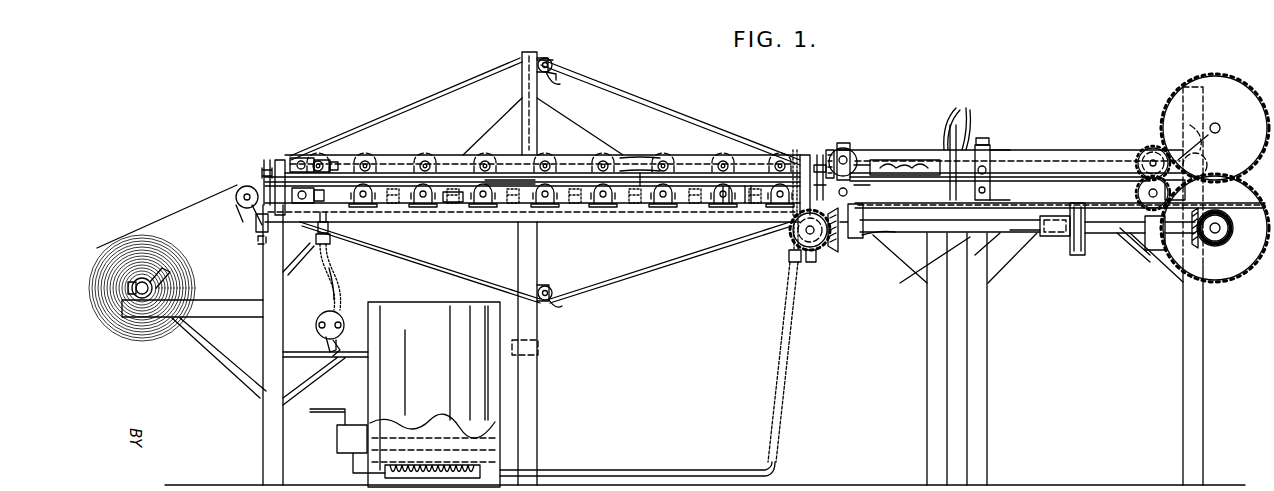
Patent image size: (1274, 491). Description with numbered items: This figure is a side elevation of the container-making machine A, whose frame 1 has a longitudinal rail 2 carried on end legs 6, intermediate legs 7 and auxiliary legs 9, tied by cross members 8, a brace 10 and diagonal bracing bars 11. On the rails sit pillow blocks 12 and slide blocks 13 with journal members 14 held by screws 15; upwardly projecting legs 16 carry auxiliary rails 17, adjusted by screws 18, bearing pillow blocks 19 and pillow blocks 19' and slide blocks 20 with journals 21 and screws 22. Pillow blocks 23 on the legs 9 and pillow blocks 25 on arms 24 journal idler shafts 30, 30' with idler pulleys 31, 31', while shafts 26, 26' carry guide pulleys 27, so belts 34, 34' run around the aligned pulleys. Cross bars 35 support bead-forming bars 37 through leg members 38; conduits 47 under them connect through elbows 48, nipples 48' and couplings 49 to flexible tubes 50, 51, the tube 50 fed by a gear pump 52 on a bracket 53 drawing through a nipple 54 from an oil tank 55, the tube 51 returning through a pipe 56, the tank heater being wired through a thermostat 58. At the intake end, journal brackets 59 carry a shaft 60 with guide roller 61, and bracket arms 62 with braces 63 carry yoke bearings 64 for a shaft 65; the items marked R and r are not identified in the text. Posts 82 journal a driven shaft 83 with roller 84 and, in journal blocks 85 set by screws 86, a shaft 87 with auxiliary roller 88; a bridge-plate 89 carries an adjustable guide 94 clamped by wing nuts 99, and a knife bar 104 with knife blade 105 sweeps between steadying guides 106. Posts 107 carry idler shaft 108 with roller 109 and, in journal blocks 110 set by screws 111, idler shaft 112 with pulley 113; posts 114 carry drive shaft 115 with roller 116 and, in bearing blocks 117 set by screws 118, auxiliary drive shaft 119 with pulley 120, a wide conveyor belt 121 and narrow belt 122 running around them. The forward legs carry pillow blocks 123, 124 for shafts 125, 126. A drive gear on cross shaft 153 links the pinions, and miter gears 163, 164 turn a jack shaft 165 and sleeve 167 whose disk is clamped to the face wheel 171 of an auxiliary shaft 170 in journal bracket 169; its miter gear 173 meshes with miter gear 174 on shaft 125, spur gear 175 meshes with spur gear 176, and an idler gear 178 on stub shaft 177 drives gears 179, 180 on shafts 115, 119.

The frame 1 is at (915, 319).
The longitudinal rail 2 is at (678, 236).
The end legs 6 is at (263, 433).
The intermediate legs 7 is at (967, 392).
The cross members 8 is at (258, 240).
The auxiliary legs 9 is at (537, 398).
The brace 10 is at (540, 348).
The diagonal bracing bars 11 is at (497, 118).
The pillow blocks 12 is at (425, 207).
The slide blocks 13 is at (300, 205).
The journal members 14 is at (318, 203).
The screws 15 is at (330, 230).
The legs 16 is at (280, 160).
The auxiliary rails 17 is at (633, 157).
The screws 18 is at (265, 158).
The pillow blocks 19 is at (721, 150).
The upper trolley 19' is at (401, 149).
The slide blocks 20 is at (322, 160).
The journals 21 is at (300, 158).
The screws 22 is at (336, 160).
The pillow blocks 23 is at (560, 275).
The arms 24 is at (528, 52).
The pillow blocks 25 is at (552, 60).
The shafts 26 is at (723, 224).
The shafts 26' is at (487, 149).
The guide pulleys 27 is at (500, 158).
The idler shaft 30 is at (548, 311).
The idler shaft 30' is at (572, 62).
The idler pulleys 31 is at (573, 311).
The idler pulleys 31' is at (564, 84).
The belts 34 is at (671, 263).
The belts 34' is at (545, 108).
The cross bars 35 is at (412, 203).
The bead-forming bars 37 is at (642, 173).
The leg members 38 is at (748, 205).
The tubular conduits 47 is at (454, 195).
The elbows 48 is at (783, 165).
The nipples 48' is at (558, 255).
The couplings 49 is at (335, 258).
The flexible tube 50 is at (336, 292).
The flexible tube 51 is at (785, 382).
The gear pump 52 is at (316, 325).
The supporting bracket 53 is at (317, 360).
The nipple 54 is at (341, 352).
The oil tank 55 is at (431, 366).
The pipe 56 is at (634, 470).
The thermostat 58 is at (340, 447).
The journal brackets 59 is at (256, 222).
The horizontal shaft 60 is at (244, 200).
The guide roller 61 is at (244, 186).
The bracket arms 62 is at (153, 318).
The diagonal braces 63 is at (213, 360).
The yoke bearings 64 is at (140, 294).
The horizontal shaft 65 is at (130, 290).
The posts 82 is at (848, 152).
The driven shaft 83 is at (855, 240).
The roller 84 is at (950, 218).
The journal block 85 is at (858, 170).
The screw 86 is at (843, 143).
The shaft 87 is at (856, 156).
The auxiliary roller 88 is at (832, 150).
The bridge-plate 89 is at (929, 213).
The adjustable guide 94 is at (950, 150).
The wing nuts 99 is at (923, 165).
The knife bar 104 is at (958, 125).
The knife blade 105 is at (950, 125).
The steadying guides 106 is at (972, 140).
The posts 107 is at (990, 150).
The idler shaft 108 is at (989, 213).
The roller 109 is at (990, 195).
The journal block 110 is at (1048, 150).
The screw 111 is at (988, 140).
The idler shaft 112 is at (990, 173).
The pulley 113 is at (985, 145).
The posts 114 is at (1163, 148).
The drive shaft 115 is at (1185, 190).
The roller 116 is at (1205, 162).
The bearing blocks 117 is at (1204, 140).
The screws 118 is at (1163, 150).
The auxiliary drive shaft 119 is at (1138, 164).
The pulley 120 is at (1142, 158).
The conveyor belt 121 is at (1086, 181).
The endless belt 122 is at (1070, 150).
The pillow blocks 123 is at (1222, 248).
The pillow blocks 124 is at (1218, 124).
The shaft 125 is at (1225, 245).
The shaft 126 is at (1222, 122).
The cross shaft 153 is at (806, 230).
The miter gear 163 is at (810, 262).
The miter gear 164 is at (834, 252).
The jack shaft 165 is at (1005, 230).
The tubular sleeve 167 is at (1050, 240).
The auxiliary journal bracket 169 is at (1152, 250).
The auxiliary shaft 170 is at (1128, 233).
The face wheel 171 is at (1094, 240).
The miter gear 173 is at (1183, 275).
The miter gear 174 is at (1234, 230).
The spur gear 175 is at (1248, 205).
The spur gear 176 is at (1208, 80).
The stub shaft 177 is at (1147, 240).
The idler gear 178 is at (1160, 245).
The gear 179 is at (1138, 193).
The gear 180 is at (1156, 158).
The container-making machine A is at (756, 145).
The roll of material R is at (188, 273).
The web r is at (172, 212).